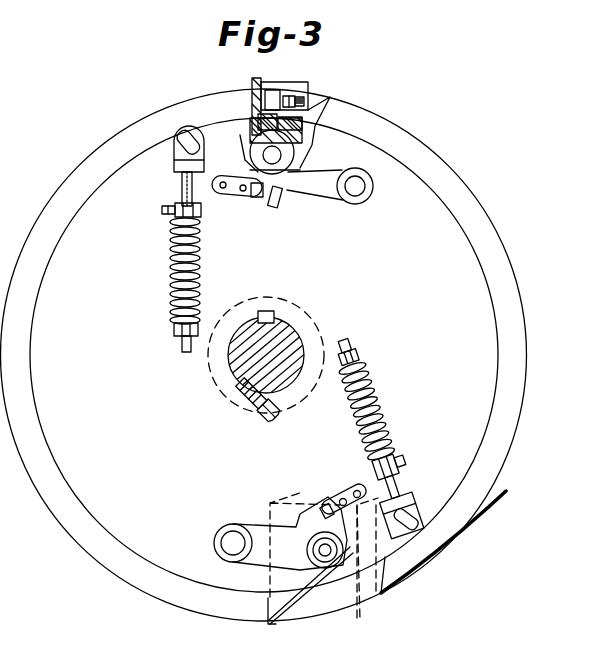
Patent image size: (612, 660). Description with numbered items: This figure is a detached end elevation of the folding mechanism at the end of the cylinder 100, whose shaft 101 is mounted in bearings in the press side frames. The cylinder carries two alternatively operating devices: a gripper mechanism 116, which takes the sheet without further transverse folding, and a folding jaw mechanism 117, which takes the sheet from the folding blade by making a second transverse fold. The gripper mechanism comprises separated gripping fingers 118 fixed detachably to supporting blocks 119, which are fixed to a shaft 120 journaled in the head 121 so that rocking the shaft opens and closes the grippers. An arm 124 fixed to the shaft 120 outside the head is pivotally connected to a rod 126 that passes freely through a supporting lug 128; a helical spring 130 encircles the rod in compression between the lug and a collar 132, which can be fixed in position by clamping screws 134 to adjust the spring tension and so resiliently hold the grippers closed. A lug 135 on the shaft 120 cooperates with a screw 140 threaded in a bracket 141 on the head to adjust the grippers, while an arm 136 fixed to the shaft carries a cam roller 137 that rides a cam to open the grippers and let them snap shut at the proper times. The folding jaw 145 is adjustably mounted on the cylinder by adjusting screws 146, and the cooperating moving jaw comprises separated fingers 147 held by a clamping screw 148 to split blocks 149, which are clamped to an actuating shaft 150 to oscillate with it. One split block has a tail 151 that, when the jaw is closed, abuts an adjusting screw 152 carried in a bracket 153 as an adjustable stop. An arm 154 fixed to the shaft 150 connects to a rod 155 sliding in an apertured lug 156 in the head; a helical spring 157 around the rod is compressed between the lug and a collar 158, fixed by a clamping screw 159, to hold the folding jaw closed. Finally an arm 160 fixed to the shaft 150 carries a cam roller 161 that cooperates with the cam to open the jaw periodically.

The cylinder 100 is at (520, 303).
The shaft 101 is at (238, 360).
The gripper mechanism 116 is at (303, 612).
The folding jaw mechanism 117 is at (257, 80).
The gripping fingers 118 is at (266, 626).
The supporting blocks 119 is at (360, 604).
The shaft 120 is at (330, 568).
The head 121 is at (452, 236).
The arm 124 is at (390, 550).
The rod 126 is at (407, 482).
The supporting lug 128 is at (352, 352).
The helical spring 130 is at (372, 402).
The collar 132 is at (396, 462).
The clamping screws 134 is at (408, 466).
The lug 135 is at (305, 512).
The arm 136 is at (262, 530).
The cam roller 137 is at (214, 540).
The screw 140 is at (326, 505).
The bracket 141 is at (336, 496).
The folding jaw 145 is at (276, 84).
The adjusting screws 146 is at (302, 97).
The fingers 147 is at (252, 100).
The clamping screw 148 is at (248, 132).
The split blocks 149 is at (313, 130).
The actuating shaft 150 is at (282, 152).
The tail 151 is at (280, 190).
The adjusting screw 152 is at (248, 197).
The bracket 153 is at (258, 198).
The arm 154 is at (210, 140).
The rod 155 is at (181, 189).
The apertured lug 156 is at (174, 330).
The helical spring 157 is at (178, 238).
The collar 158 is at (180, 216).
The clamping screw 159 is at (162, 210).
The arm 160 is at (326, 197).
The cam roller 161 is at (365, 198).